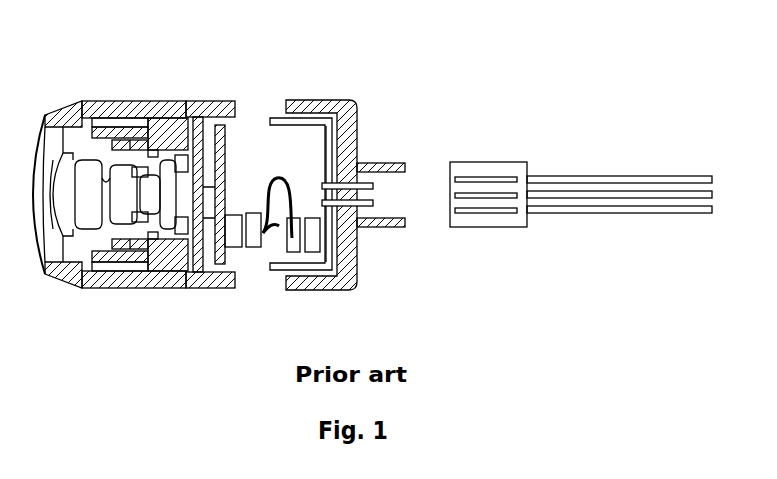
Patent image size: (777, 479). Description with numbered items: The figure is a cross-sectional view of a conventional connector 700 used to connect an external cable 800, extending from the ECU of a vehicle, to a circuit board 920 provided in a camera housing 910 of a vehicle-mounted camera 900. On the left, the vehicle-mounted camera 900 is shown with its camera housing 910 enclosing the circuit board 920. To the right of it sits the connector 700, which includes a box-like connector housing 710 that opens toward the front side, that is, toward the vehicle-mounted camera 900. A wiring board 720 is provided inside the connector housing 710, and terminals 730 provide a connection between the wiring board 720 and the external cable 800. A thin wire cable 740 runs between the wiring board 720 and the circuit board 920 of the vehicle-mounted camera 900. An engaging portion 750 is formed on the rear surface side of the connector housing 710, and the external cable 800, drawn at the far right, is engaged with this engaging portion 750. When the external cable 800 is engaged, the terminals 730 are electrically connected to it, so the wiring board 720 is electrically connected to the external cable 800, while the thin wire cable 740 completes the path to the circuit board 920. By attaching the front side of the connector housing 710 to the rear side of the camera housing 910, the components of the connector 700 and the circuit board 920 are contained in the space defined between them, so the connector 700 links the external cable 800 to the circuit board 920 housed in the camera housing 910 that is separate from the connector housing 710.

The vehicle-mounted camera 900 is at (140, 68).
The camera housing 910 is at (207, 101).
The circuit board 920 is at (218, 266).
The thin wire cable 740 is at (277, 178).
The connector 700 is at (348, 73).
The connector housing 710 is at (353, 110).
The wiring board 720 is at (327, 253).
The terminals 730 is at (375, 183).
The engaging portion 750 is at (400, 163).
The external cable 800 is at (522, 125).